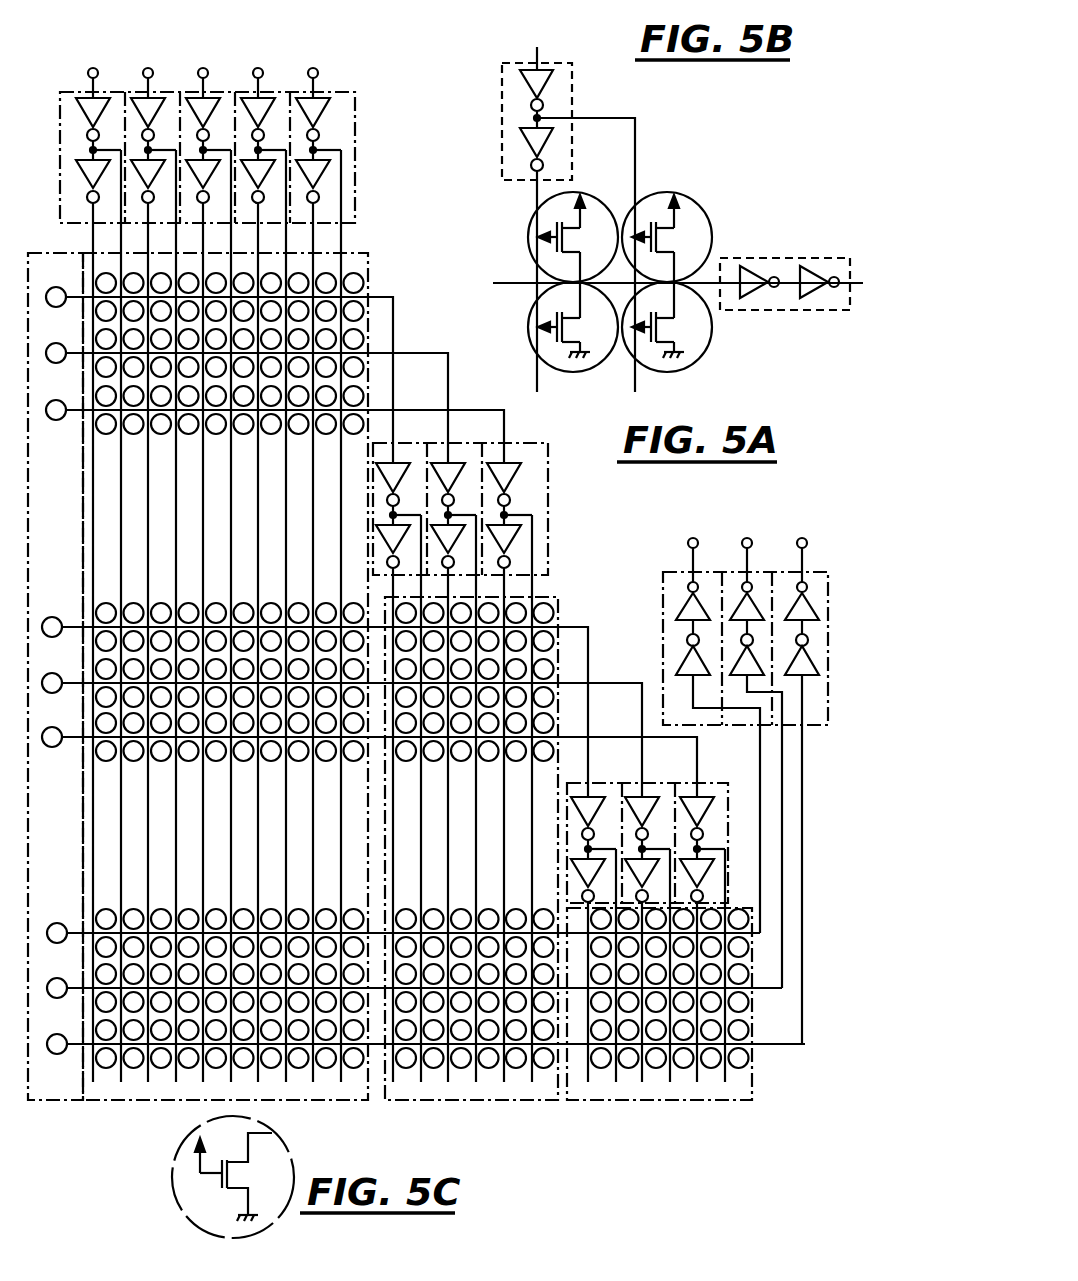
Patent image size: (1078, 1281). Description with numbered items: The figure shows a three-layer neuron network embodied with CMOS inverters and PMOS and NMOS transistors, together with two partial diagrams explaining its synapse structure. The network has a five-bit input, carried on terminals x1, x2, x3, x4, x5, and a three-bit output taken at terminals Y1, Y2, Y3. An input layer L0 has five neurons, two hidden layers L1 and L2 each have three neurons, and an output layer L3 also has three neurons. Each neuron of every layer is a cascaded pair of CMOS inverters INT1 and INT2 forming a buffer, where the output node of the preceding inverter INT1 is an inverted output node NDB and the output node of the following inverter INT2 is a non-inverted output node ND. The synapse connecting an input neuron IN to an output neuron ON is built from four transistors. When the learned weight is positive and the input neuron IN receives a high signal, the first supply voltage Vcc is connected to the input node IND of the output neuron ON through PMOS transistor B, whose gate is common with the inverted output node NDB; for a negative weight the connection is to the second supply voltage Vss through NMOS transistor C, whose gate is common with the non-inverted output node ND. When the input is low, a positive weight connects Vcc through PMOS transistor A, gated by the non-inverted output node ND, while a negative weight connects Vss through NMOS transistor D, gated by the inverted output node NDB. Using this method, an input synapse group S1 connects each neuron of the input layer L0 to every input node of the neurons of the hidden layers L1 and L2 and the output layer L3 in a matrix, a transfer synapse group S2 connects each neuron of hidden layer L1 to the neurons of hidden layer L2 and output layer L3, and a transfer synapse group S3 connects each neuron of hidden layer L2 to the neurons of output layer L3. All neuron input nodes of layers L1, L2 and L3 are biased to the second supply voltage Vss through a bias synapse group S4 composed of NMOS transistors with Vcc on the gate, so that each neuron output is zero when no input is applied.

In FIG. 5A, the input layer L0 is at (347, 190).
In FIG. 5A, the hidden layer L1 is at (528, 492).
In FIG. 5A, the hidden layer L2 is at (713, 800).
In FIG. 5A, the output layer L3 is at (652, 606).
In FIG. 5A, the input synapse group S1 is at (297, 1090).
In FIG. 5A, the transfer synapse group S2 is at (515, 1092).
In FIG. 5A, the transfer synapse group S3 is at (733, 1092).
In FIG. 5A, the bias synapse group S4 is at (48, 1078).
In FIG. 5A, the input terminal x1 is at (94, 70).
In FIG. 5A, the input terminal x2 is at (149, 70).
In FIG. 5A, the input terminal x3 is at (204, 70).
In FIG. 5A, the input terminal x4 is at (259, 70).
In FIG. 5A, the input terminal x5 is at (314, 70).
In FIG. 5A, the output terminal Y1 is at (693, 534).
In FIG. 5A, the output terminal Y2 is at (747, 534).
In FIG. 5A, the output terminal Y3 is at (802, 534).
In FIG. 5B, the input neuron IN is at (555, 97).
In FIG. 5B, the CMOS inverter INT1 is at (520, 85).
In FIG. 5B, the CMOS inverter INT2 is at (520, 145).
In FIG. 5B, the inverted output node NDB is at (635, 142).
In FIG. 5B, the non-inverted output node ND is at (536, 186).
In FIG. 5B, the input node IND is at (520, 284).
In FIG. 5B, the PMOS transistor A is at (573, 237).
In FIG. 5B, the PMOS transistor B is at (667, 237).
In FIG. 5B, the NMOS transistor C is at (573, 327).
In FIG. 5B, the NMOS transistor D is at (667, 327).
In FIG. 5B, the first supply voltage Vcc is at (686, 216).
In FIG. 5C, the first supply voltage Vcc is at (200, 1158).
In FIG. 5B, the second supply voltage Vss is at (685, 358).
In FIG. 5C, the second supply voltage Vss is at (242, 1214).
In FIG. 5B, the output neuron ON is at (828, 310).